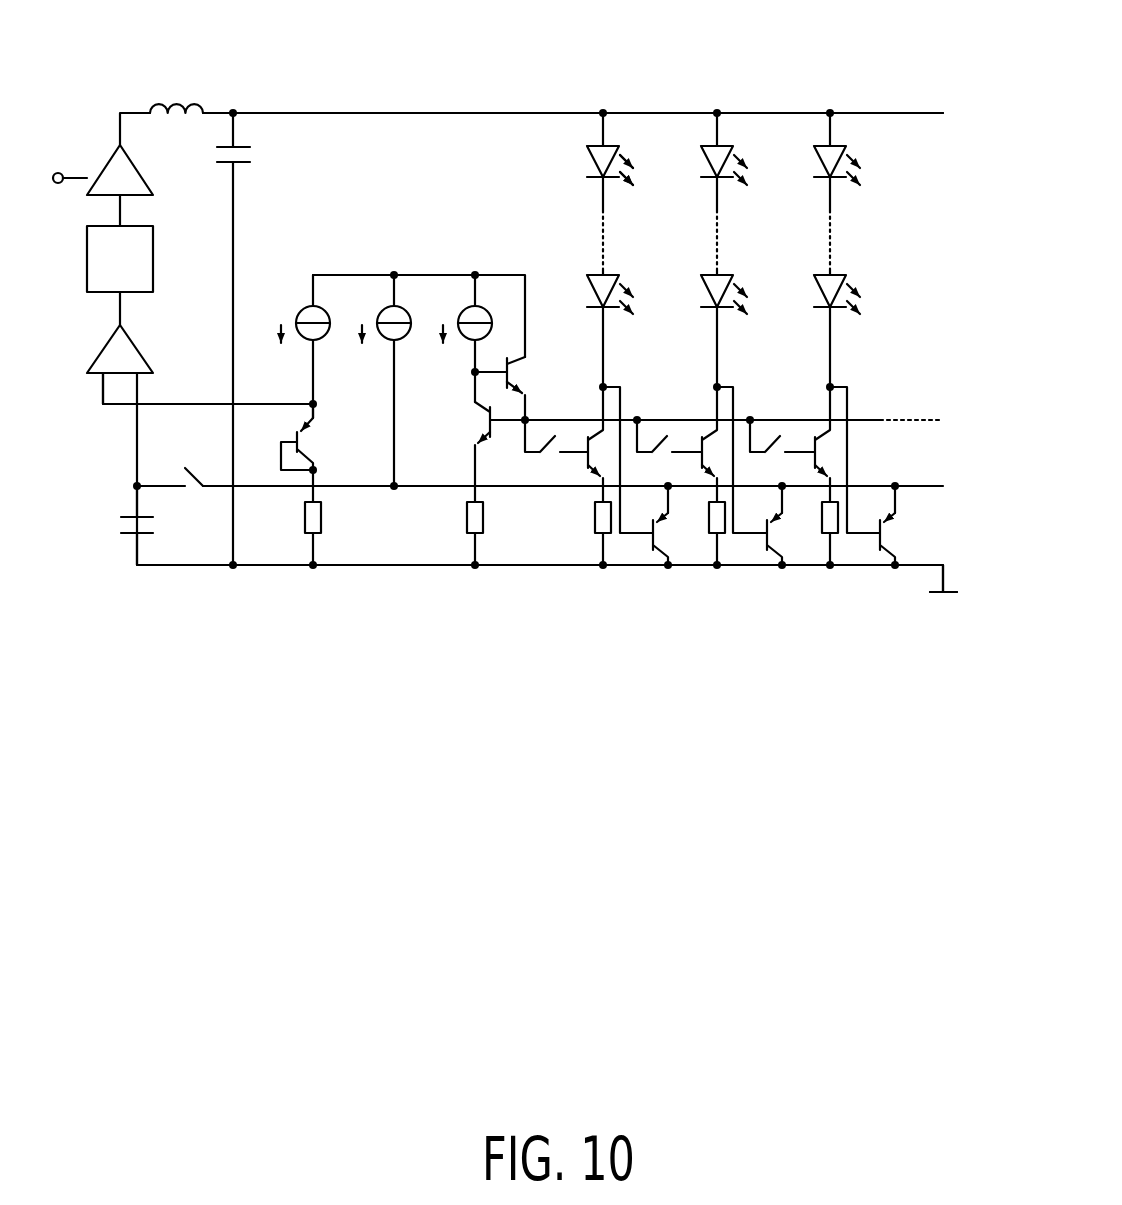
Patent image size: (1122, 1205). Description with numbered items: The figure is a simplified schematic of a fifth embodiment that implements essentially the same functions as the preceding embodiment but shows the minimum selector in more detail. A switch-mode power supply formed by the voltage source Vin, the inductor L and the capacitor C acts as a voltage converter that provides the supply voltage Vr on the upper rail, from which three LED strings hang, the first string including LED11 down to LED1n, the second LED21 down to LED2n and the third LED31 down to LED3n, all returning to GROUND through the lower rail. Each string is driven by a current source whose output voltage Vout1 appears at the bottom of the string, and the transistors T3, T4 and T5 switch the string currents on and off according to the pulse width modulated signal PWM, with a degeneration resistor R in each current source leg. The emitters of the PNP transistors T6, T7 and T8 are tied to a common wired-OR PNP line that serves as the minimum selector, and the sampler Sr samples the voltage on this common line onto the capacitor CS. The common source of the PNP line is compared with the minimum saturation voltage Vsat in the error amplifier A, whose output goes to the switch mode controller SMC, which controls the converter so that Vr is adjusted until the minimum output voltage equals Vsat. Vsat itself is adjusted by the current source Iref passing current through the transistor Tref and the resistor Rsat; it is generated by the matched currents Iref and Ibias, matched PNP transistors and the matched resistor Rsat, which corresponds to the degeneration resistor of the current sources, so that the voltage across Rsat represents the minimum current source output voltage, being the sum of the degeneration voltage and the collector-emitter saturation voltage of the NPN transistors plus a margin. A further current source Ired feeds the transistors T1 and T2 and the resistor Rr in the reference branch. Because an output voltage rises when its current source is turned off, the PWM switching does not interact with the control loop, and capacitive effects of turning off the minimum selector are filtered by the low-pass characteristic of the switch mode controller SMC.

The inductor L is at (176, 91).
The capacitor C is at (220, 339).
The voltage source Vin is at (103, 170).
The switch mode controller SMC is at (120, 260).
The error amplifier A is at (120, 349).
The minimum saturation voltage Vsat is at (180, 399).
The sampler Sr is at (178, 464).
The storage capacitor CS is at (157, 525).
The current source Iref is at (297, 346).
The bias current Ibias is at (370, 380).
The red current source Ired is at (456, 338).
The transistor Tref is at (320, 453).
The resistor Rsat is at (342, 533).
The transistor T1 is at (484, 452).
The transistor T2 is at (516, 388).
The resistor Rr is at (492, 533).
The first LED of first string LED11 is at (640, 170).
The first LED of second string LED21 is at (755, 170).
The first LED of third string LED31 is at (869, 169).
The last LED of first string LED1n is at (641, 328).
The last LED of second string LED2n is at (760, 328).
The last LED of third string LED3n is at (873, 328).
The current source output voltage Vout1 is at (757, 453).
The pulse width modulated signal PWM is at (670, 451).
The transistor T3 is at (590, 444).
The transistor T4 is at (704, 444).
The transistor T5 is at (817, 444).
The PNP transistor T6 is at (655, 525).
The PNP transistor T7 is at (769, 525).
The PNP transistor T8 is at (882, 525).
The current sense resistor R is at (705, 533).
The supply voltage Vr is at (896, 97).
The ground GROUND is at (894, 594).